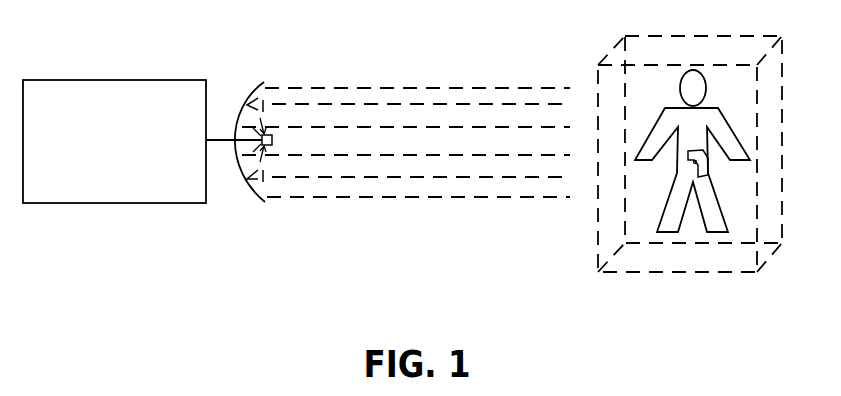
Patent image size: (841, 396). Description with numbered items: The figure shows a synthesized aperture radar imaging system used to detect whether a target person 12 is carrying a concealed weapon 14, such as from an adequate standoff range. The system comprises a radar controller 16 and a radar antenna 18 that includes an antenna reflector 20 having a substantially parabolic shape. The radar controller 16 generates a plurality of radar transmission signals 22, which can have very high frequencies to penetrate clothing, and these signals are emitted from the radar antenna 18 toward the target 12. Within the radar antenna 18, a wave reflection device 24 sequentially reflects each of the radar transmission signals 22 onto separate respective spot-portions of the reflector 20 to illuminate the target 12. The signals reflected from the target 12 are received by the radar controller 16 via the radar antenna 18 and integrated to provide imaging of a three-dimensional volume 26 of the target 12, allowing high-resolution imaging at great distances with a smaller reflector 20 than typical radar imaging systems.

The target person 12 is at (682, 108).
The concealed weapon 14 is at (708, 176).
The radar controller 16 is at (85, 80).
The radar antenna 18 is at (268, 74).
The antenna reflector 20 is at (259, 84).
The radar transmission signals 22 is at (425, 78).
The wave reflection device 24 is at (272, 141).
The three-dimensional volume 26 is at (689, 56).